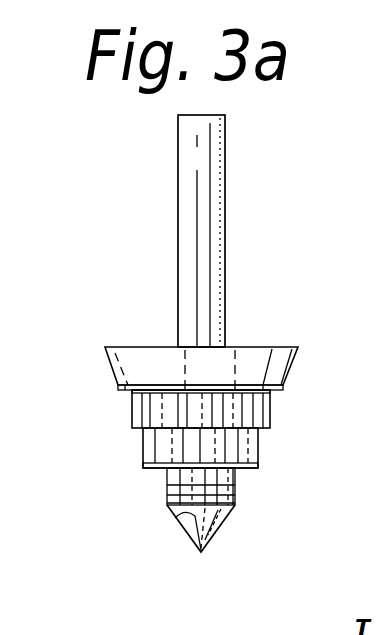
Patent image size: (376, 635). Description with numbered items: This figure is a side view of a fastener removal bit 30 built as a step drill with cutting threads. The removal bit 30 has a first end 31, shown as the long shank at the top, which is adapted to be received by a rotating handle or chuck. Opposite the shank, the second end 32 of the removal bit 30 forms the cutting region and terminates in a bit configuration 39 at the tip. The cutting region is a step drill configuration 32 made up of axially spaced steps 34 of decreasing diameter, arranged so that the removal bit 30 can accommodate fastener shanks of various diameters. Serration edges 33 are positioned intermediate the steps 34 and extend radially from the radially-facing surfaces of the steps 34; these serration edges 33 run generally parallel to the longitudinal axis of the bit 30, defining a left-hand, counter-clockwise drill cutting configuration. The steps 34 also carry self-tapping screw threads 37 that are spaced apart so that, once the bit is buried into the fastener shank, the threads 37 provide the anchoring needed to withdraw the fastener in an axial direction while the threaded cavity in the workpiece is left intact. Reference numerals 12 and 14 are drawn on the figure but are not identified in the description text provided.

The fastener removal bit 30 is at (93, 322).
The first end 31 is at (225, 150).
The shaft 12 is at (217, 232).
The second end 32 is at (110, 388).
The serration edges 33 is at (270, 404).
The steps 34 is at (286, 388).
The self-tapping screw threads 37 is at (227, 517).
The bit configuration 39 is at (215, 535).
The tip point 14 is at (183, 530).